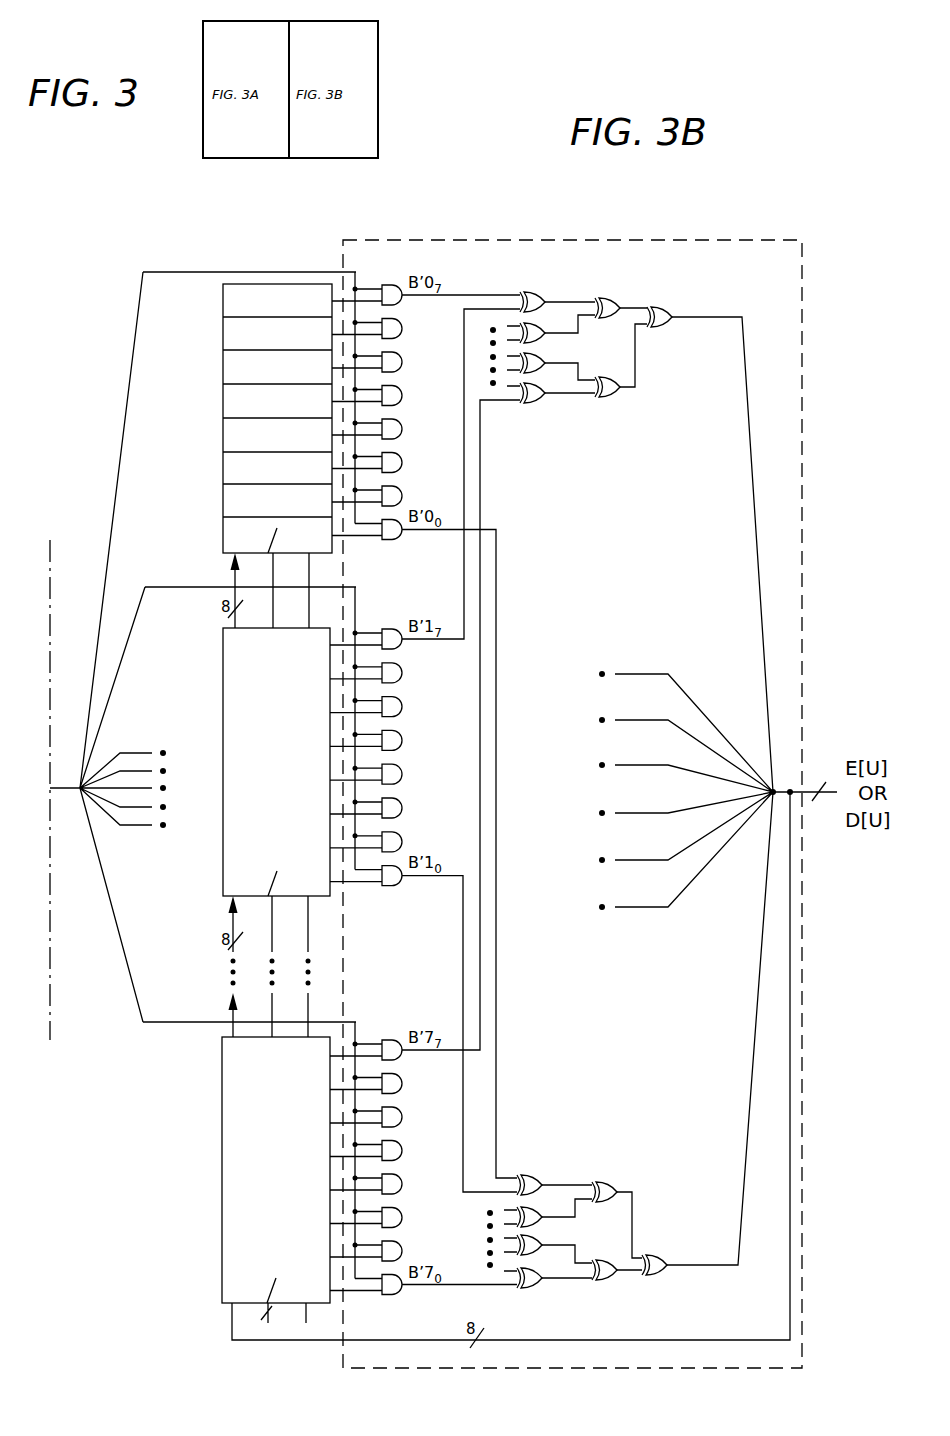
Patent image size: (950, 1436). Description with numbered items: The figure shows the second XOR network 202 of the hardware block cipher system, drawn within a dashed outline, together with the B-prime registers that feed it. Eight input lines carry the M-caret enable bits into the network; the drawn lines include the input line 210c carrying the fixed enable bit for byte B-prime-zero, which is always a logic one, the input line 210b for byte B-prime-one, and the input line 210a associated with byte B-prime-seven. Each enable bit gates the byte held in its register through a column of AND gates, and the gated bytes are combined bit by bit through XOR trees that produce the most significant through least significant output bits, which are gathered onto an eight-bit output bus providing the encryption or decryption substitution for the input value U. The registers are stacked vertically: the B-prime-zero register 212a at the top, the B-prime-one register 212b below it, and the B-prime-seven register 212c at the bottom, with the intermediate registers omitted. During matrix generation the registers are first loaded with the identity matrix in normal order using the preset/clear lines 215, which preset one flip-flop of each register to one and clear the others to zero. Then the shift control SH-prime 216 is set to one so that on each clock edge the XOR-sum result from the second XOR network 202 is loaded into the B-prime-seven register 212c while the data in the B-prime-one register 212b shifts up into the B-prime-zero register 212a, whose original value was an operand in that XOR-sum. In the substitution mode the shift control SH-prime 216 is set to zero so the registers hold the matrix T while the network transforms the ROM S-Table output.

The second XOR network 202 is at (597, 241).
The input line 210a is at (205, 1022).
The input line 210b is at (213, 587).
The input line 210c is at (205, 272).
The B'0 register 212a is at (222, 368).
The B'1 register 212b is at (222, 728).
The B'7 register 212c is at (222, 1195).
The preset/clear lines 215 is at (265, 1318).
The shift control SH' 216 is at (305, 1322).